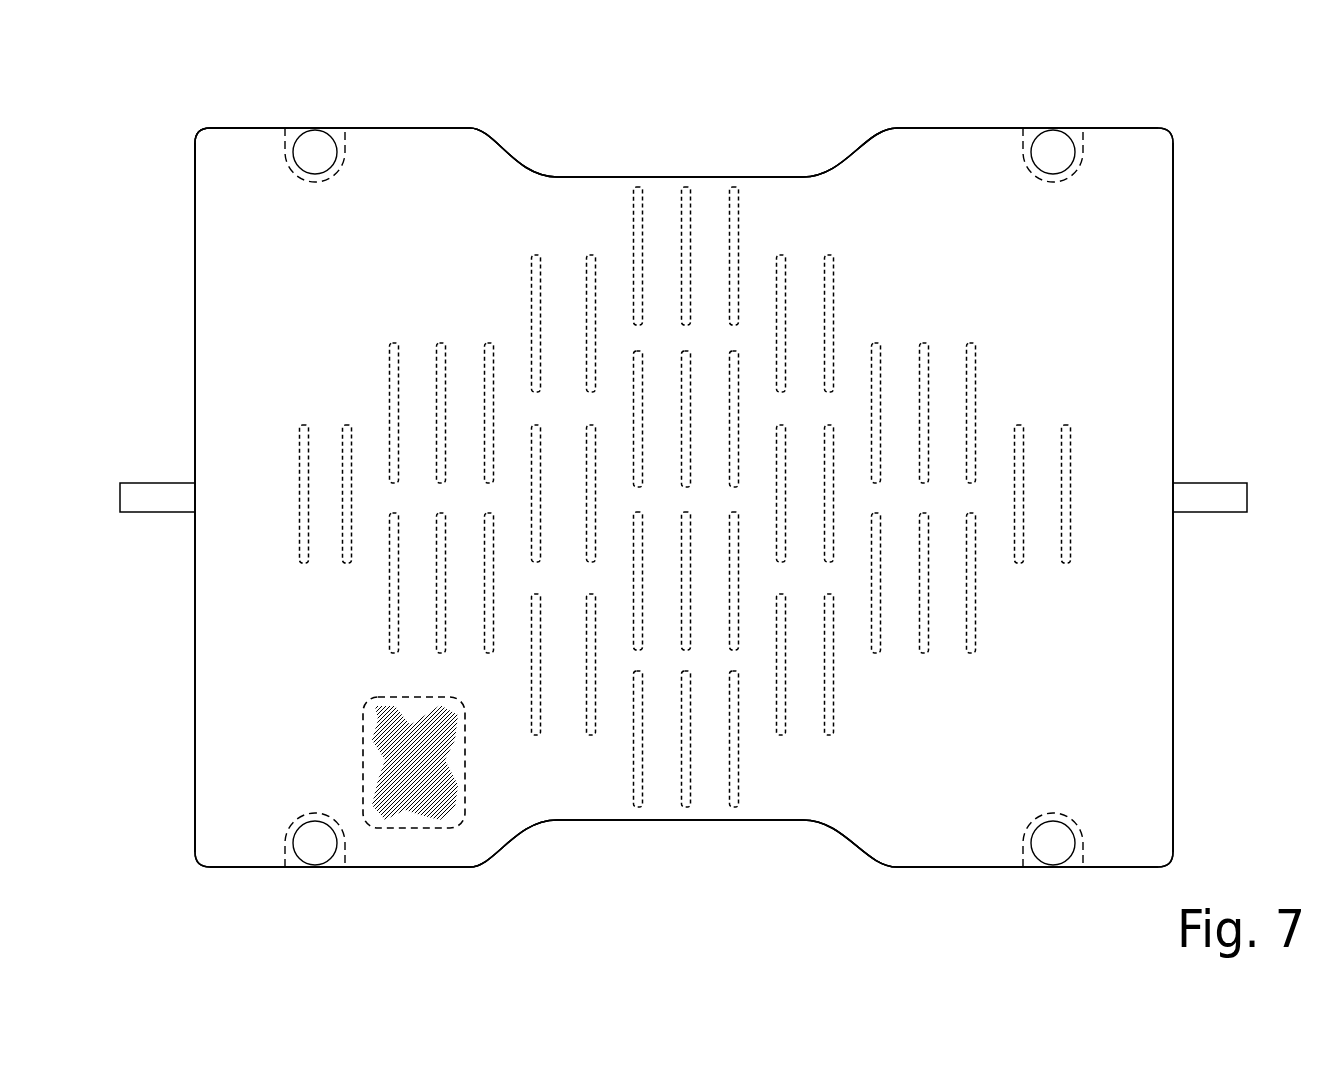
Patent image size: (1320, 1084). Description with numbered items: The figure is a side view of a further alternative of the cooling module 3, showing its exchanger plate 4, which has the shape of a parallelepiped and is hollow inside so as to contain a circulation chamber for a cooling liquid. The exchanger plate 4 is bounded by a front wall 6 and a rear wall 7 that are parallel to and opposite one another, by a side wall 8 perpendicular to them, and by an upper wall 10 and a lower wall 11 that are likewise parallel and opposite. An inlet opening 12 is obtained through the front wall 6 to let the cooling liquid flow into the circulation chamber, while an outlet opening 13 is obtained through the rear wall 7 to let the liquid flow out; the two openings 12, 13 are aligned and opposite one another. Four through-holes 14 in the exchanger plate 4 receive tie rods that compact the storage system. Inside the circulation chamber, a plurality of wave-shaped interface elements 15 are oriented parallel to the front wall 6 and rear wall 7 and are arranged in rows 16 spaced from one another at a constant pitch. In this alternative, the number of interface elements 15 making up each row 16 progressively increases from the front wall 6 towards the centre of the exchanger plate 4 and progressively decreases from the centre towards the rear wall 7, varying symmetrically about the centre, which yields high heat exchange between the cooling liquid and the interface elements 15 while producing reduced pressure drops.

The cooling module 3 is at (165, 890).
The exchanger plate 4 is at (638, 107).
The front wall 6 is at (193, 228).
The rear wall 7 is at (1174, 247).
The side wall 8 is at (232, 152).
The upper wall 10 is at (445, 127).
The lower wall 11 is at (412, 868).
The inlet opening 12 is at (160, 497).
The outlet opening 13 is at (1220, 493).
The through-hole 14 is at (1051, 150).
The interface element 15 is at (387, 588).
The row 16 is at (378, 322).